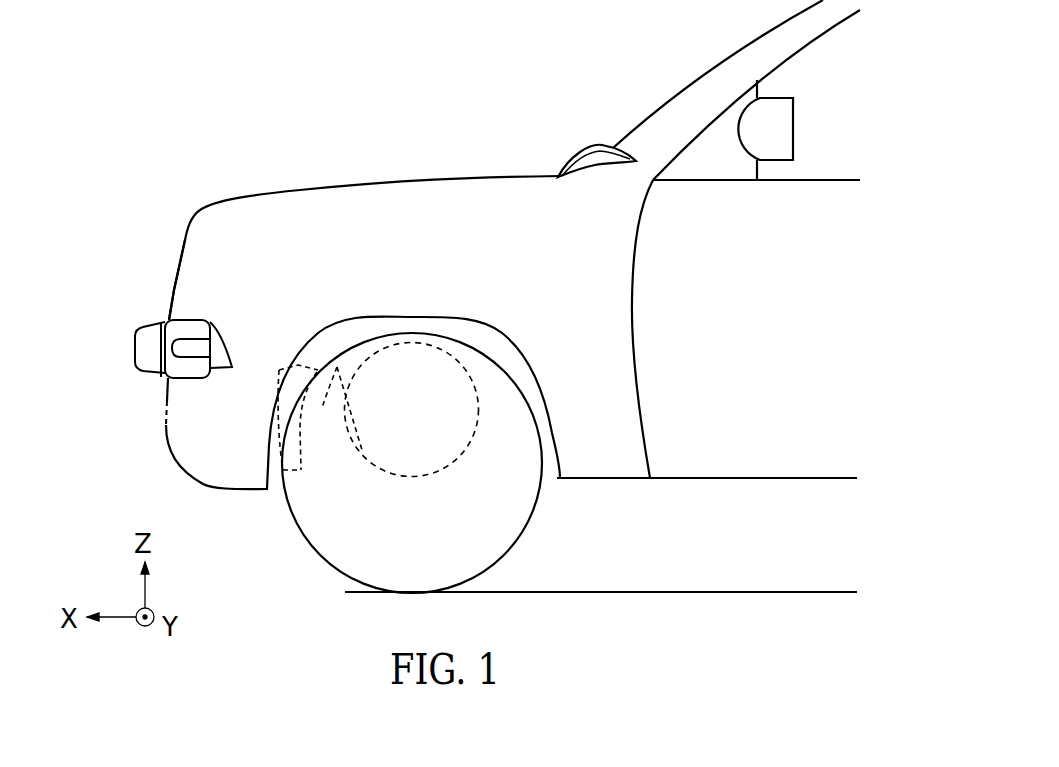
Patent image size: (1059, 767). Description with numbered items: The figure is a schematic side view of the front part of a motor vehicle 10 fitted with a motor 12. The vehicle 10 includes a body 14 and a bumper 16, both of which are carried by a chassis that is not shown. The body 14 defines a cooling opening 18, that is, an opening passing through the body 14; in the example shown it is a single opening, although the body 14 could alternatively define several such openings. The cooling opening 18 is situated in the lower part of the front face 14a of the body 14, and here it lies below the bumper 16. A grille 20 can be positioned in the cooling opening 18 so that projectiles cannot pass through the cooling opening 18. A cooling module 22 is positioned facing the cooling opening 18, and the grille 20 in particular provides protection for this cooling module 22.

The motor vehicle 10 is at (233, 86).
The motor 12 is at (360, 450).
The body 14 is at (195, 214).
The front face 14a is at (173, 250).
The bumper 16 is at (150, 340).
The cooling opening 18 is at (158, 418).
The grille 20 is at (165, 405).
The cooling module 22 is at (267, 436).